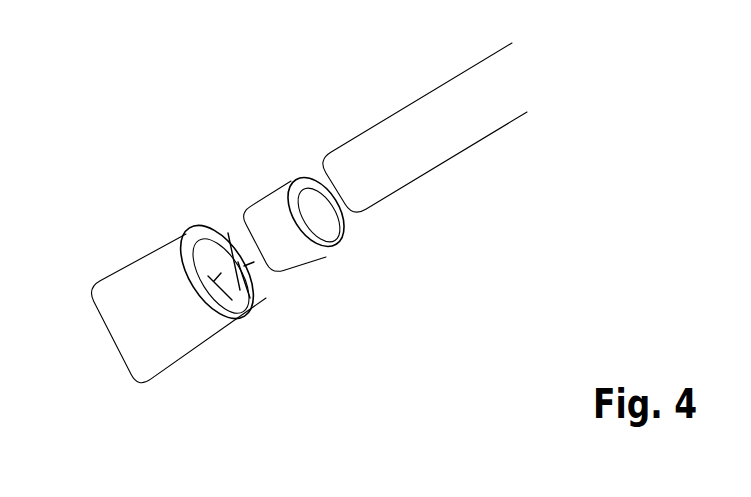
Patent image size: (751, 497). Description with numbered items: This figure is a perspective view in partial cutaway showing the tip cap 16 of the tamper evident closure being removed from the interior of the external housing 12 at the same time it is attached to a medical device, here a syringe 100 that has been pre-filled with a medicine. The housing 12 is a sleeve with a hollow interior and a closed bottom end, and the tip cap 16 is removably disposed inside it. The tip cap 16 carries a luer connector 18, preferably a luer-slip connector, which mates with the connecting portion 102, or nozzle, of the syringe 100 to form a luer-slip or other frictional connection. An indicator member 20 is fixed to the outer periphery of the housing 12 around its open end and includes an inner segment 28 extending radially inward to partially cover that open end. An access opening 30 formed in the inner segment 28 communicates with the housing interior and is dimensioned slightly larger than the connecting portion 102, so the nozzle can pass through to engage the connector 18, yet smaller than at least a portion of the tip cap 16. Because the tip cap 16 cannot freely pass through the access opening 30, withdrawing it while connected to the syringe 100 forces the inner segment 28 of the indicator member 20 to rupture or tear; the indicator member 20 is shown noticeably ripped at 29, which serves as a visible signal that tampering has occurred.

The external housing 12 is at (197, 350).
The syringe 100 is at (503, 140).
The tip cap 16 is at (282, 187).
The indicator member 20 is at (204, 232).
The luer connector 18 is at (320, 216).
The connecting portion 102 is at (323, 182).
The inner segment 28 is at (250, 283).
The rip 29 is at (226, 230).
The access opening 30 is at (220, 263).